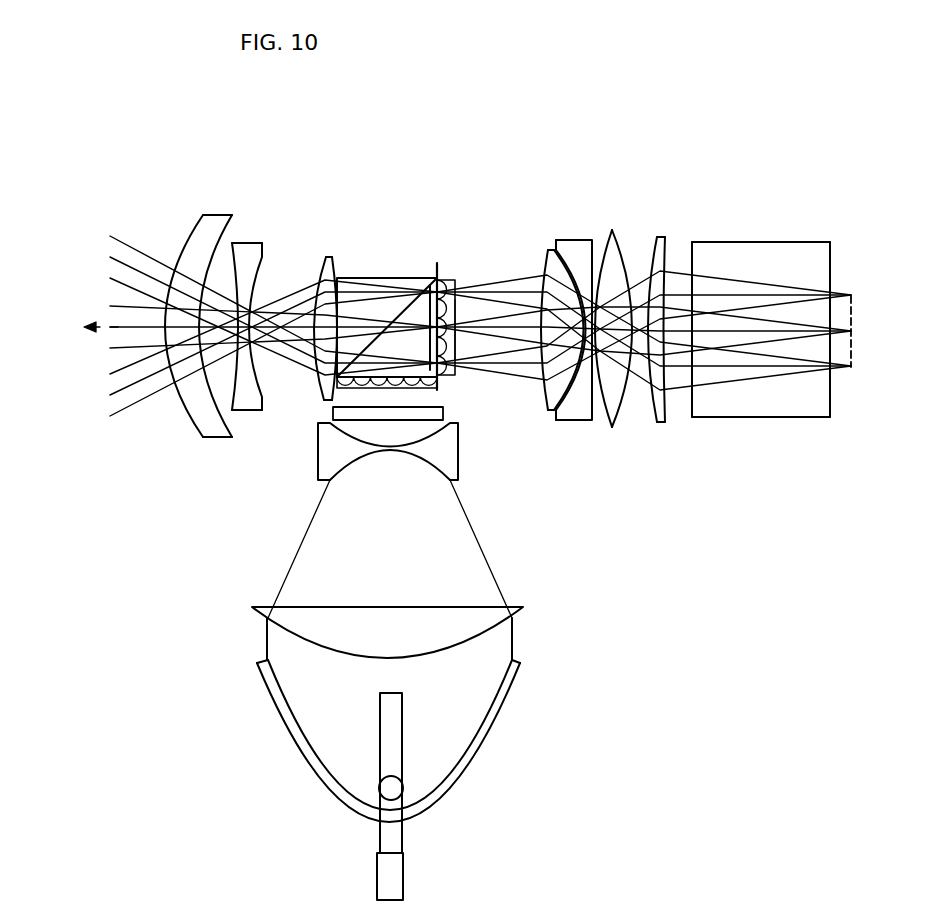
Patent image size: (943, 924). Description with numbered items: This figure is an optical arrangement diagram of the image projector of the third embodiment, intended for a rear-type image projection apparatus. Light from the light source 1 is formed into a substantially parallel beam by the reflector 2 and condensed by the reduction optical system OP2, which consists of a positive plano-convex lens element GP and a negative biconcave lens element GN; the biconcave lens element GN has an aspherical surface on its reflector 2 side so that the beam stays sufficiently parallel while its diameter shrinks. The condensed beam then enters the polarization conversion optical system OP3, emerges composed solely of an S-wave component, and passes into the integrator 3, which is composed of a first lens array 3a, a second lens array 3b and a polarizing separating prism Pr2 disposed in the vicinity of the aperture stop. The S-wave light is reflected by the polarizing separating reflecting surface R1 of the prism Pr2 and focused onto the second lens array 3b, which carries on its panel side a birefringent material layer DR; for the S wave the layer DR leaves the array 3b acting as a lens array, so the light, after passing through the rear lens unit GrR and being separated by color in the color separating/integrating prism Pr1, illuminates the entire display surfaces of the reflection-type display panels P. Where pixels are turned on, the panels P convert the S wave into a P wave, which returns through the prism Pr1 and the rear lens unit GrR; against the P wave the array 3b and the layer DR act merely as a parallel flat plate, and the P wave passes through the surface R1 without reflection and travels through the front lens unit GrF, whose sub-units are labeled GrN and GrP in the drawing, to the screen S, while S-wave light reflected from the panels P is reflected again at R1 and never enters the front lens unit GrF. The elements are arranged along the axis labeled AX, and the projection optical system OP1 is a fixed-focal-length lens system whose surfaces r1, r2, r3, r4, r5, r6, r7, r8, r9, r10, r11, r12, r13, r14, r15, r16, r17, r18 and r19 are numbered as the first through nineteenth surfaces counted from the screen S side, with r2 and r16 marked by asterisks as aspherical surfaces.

The light source 1 is at (393, 790).
The reflector 2 is at (500, 717).
The integrator 3 is at (455, 148).
The first lens array 3a is at (442, 383).
The second lens array 3b is at (456, 377).
The projection optical system OP1 is at (153, 111).
The reduction optical system OP2 is at (530, 630).
The polarization conversion optical system OP3 is at (441, 413).
The front lens unit GrF is at (157, 148).
The negative lens group GrN is at (157, 182).
The positive lens group GrP is at (327, 256).
The rear lens unit GrR is at (677, 150).
The negative biconcave lens element GN is at (459, 456).
The positive plano-convex lens element GP is at (508, 606).
The color separating/integrating prism Pr1 is at (768, 324).
The polarizing separating prism Pr2 is at (360, 278).
The polarizing separating reflecting surface R1 is at (400, 315).
The birefringent material layer DR is at (452, 280).
The screen S is at (68, 339).
The reflection-type display panels P is at (876, 342).
The optical axis AX is at (85, 360).
The first surface r1 is at (196, 228).
The second surface r2 is at (222, 246).
The third surface r3 is at (233, 396).
The fourth surface r4 is at (260, 395).
The fifth surface r5 is at (320, 268).
The sixth surface r6 is at (324, 393).
The seventh surface r7 is at (343, 279).
The eighth surface r8 is at (428, 279).
The ninth surface r9 is at (437, 276).
The tenth surface r10 is at (546, 257).
The eleventh surface r11 is at (554, 248).
The twelfth surface r12 is at (563, 409).
The thirteenth surface r13 is at (590, 404).
The fourteenth surface r14 is at (603, 247).
The fifteenth surface r15 is at (619, 236).
The sixteenth surface r16 is at (660, 248).
The seventeenth surface r17 is at (667, 250).
The eighteenth surface r18 is at (691, 418).
The nineteenth surface r19 is at (830, 418).